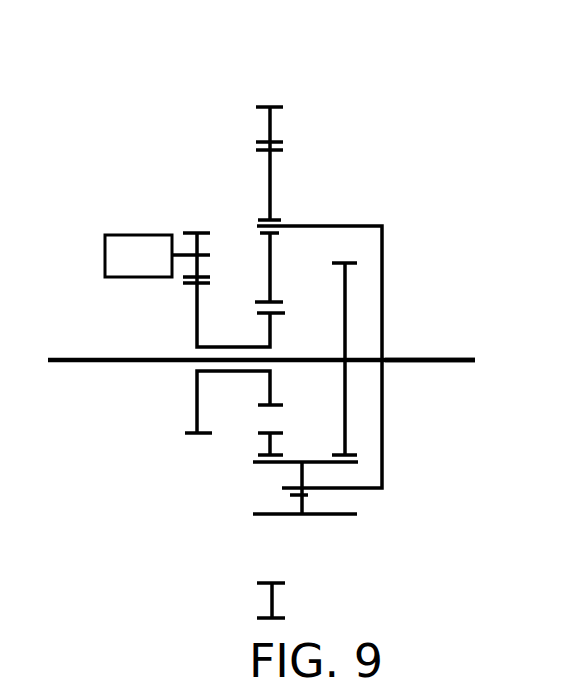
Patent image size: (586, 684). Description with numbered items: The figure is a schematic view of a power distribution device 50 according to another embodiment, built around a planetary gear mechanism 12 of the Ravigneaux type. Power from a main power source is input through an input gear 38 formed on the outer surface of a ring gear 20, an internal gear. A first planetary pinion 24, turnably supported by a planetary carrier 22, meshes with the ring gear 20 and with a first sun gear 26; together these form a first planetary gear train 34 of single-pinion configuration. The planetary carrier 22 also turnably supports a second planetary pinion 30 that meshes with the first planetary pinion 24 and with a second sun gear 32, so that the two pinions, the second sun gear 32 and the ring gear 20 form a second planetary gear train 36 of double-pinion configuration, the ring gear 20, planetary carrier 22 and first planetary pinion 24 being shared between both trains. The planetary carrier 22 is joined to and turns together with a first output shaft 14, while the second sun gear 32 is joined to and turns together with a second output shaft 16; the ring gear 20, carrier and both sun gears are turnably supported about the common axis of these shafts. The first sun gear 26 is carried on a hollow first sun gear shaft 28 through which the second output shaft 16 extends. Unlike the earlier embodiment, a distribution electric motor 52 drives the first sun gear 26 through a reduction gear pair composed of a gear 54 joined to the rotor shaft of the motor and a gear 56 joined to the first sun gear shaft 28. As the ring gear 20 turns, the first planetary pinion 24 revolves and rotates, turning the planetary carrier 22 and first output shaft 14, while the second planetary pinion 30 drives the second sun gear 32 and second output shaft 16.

The power distribution device 50 is at (130, 102).
The planetary gear mechanism 12 is at (358, 145).
The first output shaft 14 is at (437, 358).
The second output shaft 16 is at (90, 358).
The ring gear 20 is at (280, 128).
The planetary carrier 22 is at (385, 253).
The first planetary pinion 24 is at (272, 177).
The first sun gear 26 is at (265, 325).
The first sun gear shaft 28 is at (223, 377).
The second planetary pinion 30 is at (305, 508).
The second sun gear 32 is at (347, 433).
The first planetary gear train 34 is at (240, 133).
The second planetary gear train 36 is at (328, 533).
The input gear 38 is at (260, 102).
The distribution electric motor 52 is at (138, 235).
The gear 54 is at (188, 232).
The gear 56 is at (190, 433).